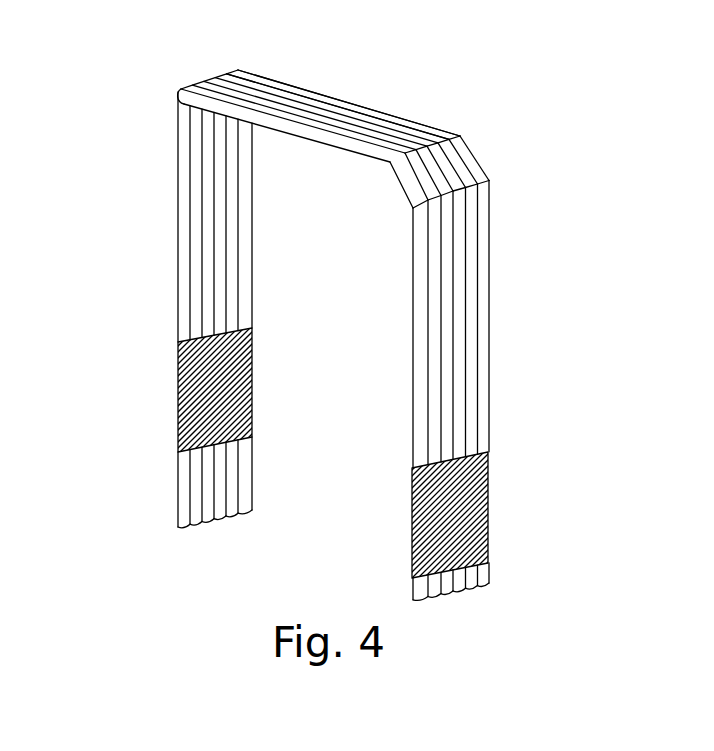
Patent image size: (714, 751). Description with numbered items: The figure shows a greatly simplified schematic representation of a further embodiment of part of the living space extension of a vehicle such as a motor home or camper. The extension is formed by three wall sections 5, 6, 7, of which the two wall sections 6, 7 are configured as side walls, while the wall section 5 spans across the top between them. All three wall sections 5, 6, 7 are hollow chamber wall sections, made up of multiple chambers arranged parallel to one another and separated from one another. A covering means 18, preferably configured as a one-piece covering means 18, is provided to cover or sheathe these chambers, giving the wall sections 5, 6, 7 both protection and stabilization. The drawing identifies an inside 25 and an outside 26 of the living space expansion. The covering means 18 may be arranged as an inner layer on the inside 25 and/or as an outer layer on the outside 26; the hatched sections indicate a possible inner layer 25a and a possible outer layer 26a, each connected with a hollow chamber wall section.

The outside 26 is at (360, 88).
The wall section 5 is at (393, 121).
The inside 25 is at (312, 183).
The wall section 6 is at (179, 290).
The inner layer 25a is at (178, 396).
The covering means 18 is at (461, 317).
The wall section 7 is at (490, 427).
The outer layer 26a is at (492, 522).